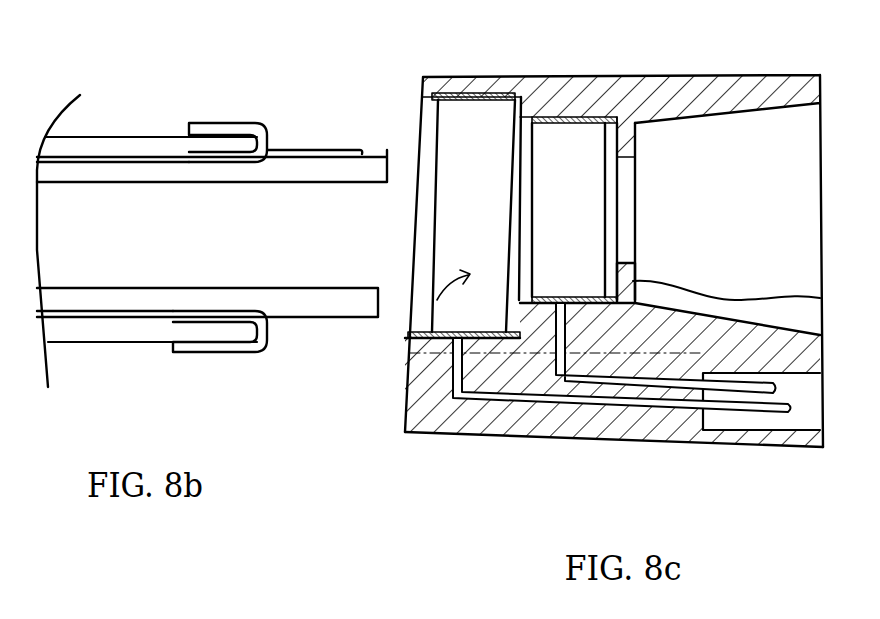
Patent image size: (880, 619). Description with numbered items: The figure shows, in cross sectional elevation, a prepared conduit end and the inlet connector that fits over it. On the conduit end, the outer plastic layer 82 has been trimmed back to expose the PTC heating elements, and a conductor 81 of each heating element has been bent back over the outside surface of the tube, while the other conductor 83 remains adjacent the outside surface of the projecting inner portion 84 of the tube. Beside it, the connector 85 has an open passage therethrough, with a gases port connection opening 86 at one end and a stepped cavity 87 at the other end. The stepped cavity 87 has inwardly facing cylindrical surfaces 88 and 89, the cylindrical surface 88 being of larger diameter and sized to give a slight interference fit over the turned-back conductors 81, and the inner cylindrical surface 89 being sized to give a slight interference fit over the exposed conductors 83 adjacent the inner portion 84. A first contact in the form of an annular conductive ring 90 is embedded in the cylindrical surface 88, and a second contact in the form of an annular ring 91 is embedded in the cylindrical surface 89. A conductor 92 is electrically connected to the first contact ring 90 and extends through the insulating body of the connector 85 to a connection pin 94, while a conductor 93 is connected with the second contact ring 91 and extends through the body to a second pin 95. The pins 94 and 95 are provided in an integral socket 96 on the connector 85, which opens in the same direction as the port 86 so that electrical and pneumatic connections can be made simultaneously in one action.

In FIG. 8b, the conductor 81 is at (222, 353).
In FIG. 8b, the outer plastic layer 82 is at (115, 345).
In FIG. 8b, the conductor 83 is at (328, 318).
In FIG. 8b, the inner portion 84 is at (340, 298).
In FIG. 8c, the connector 85 is at (576, 286).
In FIG. 8c, the gases port connection opening 86 is at (670, 207).
In FIG. 8c, the stepped cavity 87 is at (400, 428).
In FIG. 8c, the cylindrical surface 88 is at (425, 147).
In FIG. 8c, the cylindrical surface 89 is at (471, 174).
In FIG. 8c, the annular conductive ring 90 is at (487, 92).
In FIG. 8c, the annular ring 91 is at (598, 117).
In FIG. 8c, the conductor 92 is at (492, 430).
In FIG. 8c, the conductor 93 is at (573, 386).
In FIG. 8c, the connection pin 94 is at (737, 412).
In FIG. 8c, the second pin 95 is at (763, 395).
In FIG. 8c, the integral socket 96 is at (797, 414).